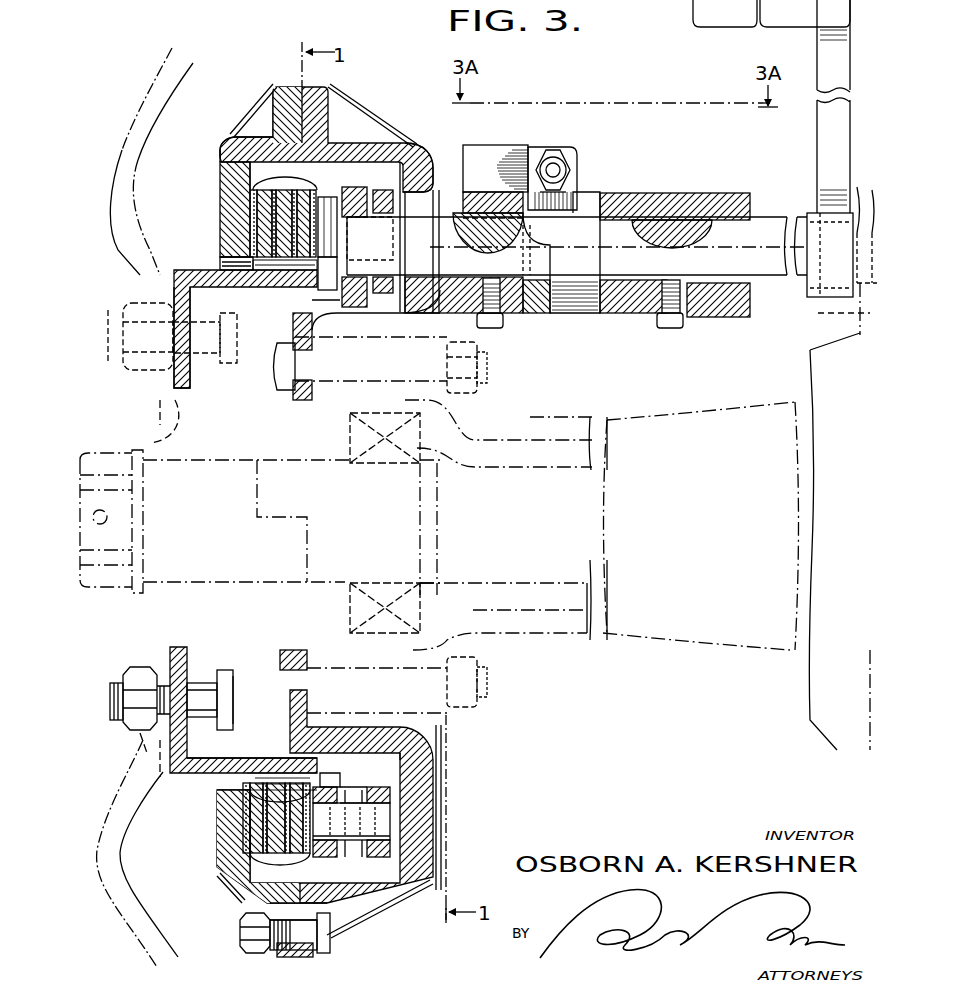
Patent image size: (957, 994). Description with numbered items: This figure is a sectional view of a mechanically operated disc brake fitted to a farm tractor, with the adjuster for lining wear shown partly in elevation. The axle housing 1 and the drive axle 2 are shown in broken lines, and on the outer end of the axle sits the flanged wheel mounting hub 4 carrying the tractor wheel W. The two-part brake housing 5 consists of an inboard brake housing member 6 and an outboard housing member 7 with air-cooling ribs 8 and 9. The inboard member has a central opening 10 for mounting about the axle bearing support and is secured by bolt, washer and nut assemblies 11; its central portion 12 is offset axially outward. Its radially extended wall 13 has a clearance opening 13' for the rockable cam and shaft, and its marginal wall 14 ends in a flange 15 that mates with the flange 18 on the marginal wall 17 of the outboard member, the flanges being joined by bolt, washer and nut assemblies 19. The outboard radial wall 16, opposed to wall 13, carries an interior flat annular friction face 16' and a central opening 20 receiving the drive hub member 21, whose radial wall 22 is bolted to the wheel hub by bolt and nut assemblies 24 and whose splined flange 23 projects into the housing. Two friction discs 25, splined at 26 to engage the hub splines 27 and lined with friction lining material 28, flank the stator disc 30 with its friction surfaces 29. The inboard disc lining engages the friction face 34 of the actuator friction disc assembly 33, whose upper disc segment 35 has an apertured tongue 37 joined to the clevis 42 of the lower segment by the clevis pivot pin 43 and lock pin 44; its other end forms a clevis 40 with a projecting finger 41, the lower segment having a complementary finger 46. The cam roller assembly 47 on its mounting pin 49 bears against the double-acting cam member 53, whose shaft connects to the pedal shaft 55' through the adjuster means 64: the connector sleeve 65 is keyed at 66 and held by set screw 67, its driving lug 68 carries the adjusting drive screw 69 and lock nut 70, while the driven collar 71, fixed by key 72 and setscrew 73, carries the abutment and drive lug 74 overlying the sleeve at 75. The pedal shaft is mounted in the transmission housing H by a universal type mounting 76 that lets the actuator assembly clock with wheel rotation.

The tractor wheel W is at (140, 108).
The axle housing 1 is at (620, 418).
The drive axle 2 is at (260, 522).
The flanged wheel mounting hub 4 is at (175, 397).
The brake housing 5 is at (222, 142).
The inboard brake housing member 6 is at (405, 150).
The outboard housing member 7 is at (245, 152).
The air-cooling ribs 8 is at (352, 106).
The air-cooling ribs 9 is at (258, 110).
The central opening 10 is at (290, 397).
The bolt, washer and nut assemblies 11 is at (485, 382).
The central portion 12 is at (295, 340).
The radially extended wall 13 is at (442, 509).
The clearance opening 13' is at (449, 242).
The axially extended marginal wall 14 is at (370, 146).
The radially extended apertured flange 15 is at (305, 958).
The radially extended wall 16 is at (205, 511).
The flat annular friction face 16' is at (205, 174).
The axially extended marginal wall 17 is at (262, 885).
The radially extended apertured flange 18 is at (280, 957).
The bolt, washer and nut assemblies 19 is at (240, 946).
The central opening 20 is at (228, 775).
The drive hub member 21 is at (220, 262).
The radially disposed wall 22 is at (180, 300).
The axially extended marginal splined flange 23 is at (245, 288).
The bolt and nut assemblies 24 is at (125, 357).
The friction discs 25 is at (248, 202).
The splines 26 is at (290, 272).
The seal ring 27 is at (222, 262).
The friction lining material 28 is at (282, 190).
The friction surfaces 29 is at (300, 235).
The stator disc 30 is at (258, 220).
The actuator friction disc assembly 33 is at (400, 795).
The friction face 34 is at (326, 197).
The upper disc segment 35 is at (395, 770).
The apertured tongue 37 is at (375, 787).
The clevis 40 is at (313, 343).
The projecting finger 41 is at (394, 203).
The clevis 42 is at (330, 858).
The clevis pivot pin 43 is at (380, 830).
The lock pin 44 is at (395, 842).
The projecting finger 46 is at (395, 288).
The cam roller assembly 47 is at (324, 290).
The mounting pin 49 is at (393, 240).
The cam member 53 is at (352, 190).
The pedal shaft 55' is at (577, 246).
The adjuster means 64 is at (600, 190).
The connector sleeve 65 is at (640, 193).
The key 66 is at (672, 232).
The set screw 67 is at (660, 325).
The driving lug 68 is at (578, 170).
The adjusting drive screw 69 is at (553, 150).
The lock nut 70 is at (543, 160).
The driven collar 71 is at (478, 198).
The key 72 is at (488, 233).
The setscrew 73 is at (503, 322).
The adjuster screw abutment and drive lug 74 is at (485, 155).
The overlying portion 75 is at (570, 155).
The universal type mounting 76 is at (850, 215).
The axle and transmission housing H is at (833, 312).